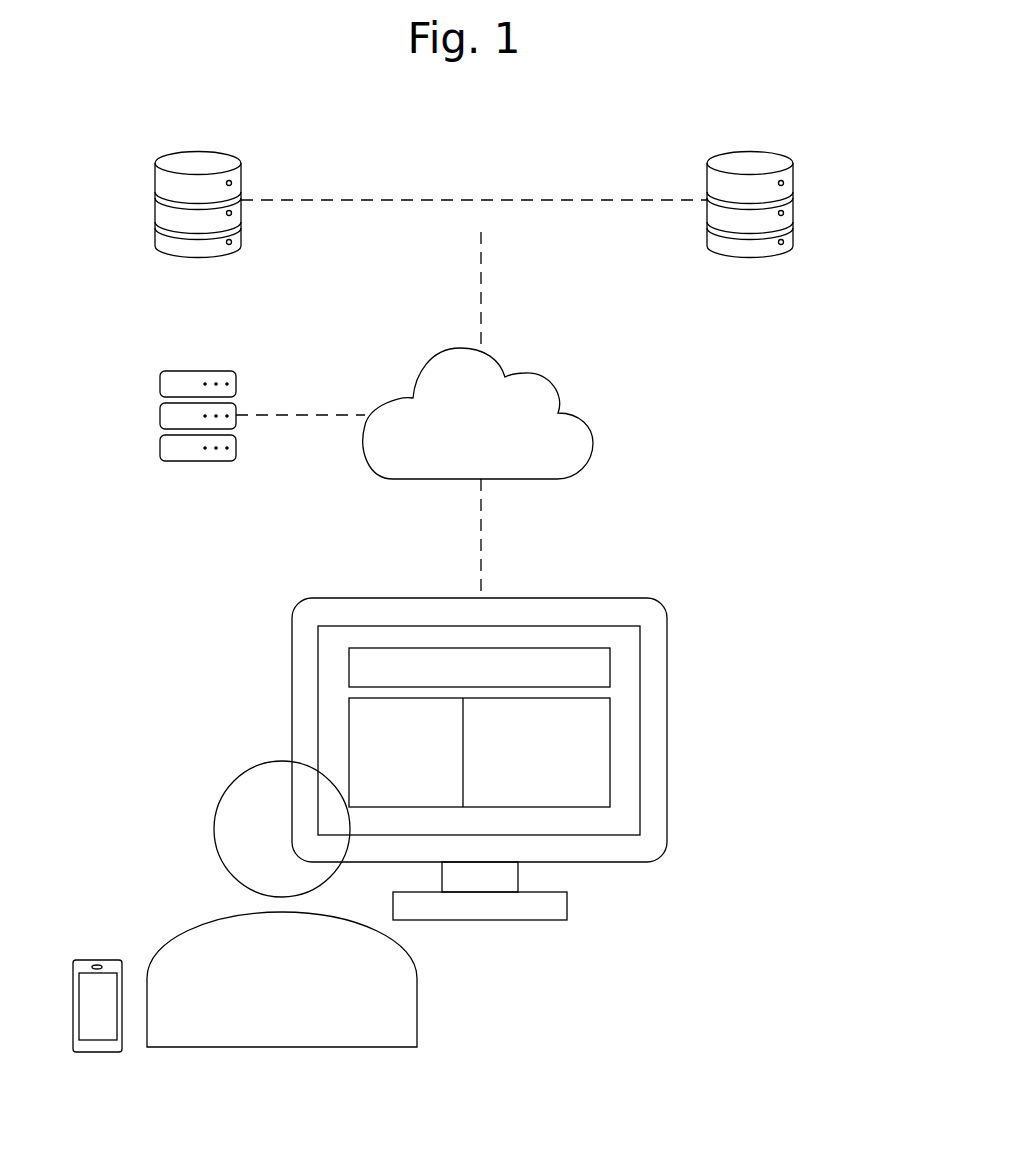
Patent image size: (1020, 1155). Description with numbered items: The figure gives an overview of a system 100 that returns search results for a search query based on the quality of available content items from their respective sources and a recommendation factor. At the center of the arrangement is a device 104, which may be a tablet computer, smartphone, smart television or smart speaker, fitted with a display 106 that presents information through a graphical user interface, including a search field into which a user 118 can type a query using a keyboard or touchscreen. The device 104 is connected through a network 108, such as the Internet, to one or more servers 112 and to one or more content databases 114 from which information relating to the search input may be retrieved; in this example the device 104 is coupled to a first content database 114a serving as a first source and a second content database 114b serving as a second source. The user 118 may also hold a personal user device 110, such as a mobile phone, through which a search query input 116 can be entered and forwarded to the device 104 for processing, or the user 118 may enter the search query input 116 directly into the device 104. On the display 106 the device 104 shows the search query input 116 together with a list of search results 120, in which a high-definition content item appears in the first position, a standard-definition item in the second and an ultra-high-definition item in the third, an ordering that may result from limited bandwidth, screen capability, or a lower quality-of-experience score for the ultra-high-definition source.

The system 100 is at (830, 422).
The content databases 114 is at (462, 179).
The first content database 114a is at (141, 184).
The second content database 114b is at (801, 184).
The server 112 is at (152, 398).
The network 108 is at (583, 418).
The device 104 is at (353, 598).
The display 106 is at (667, 713).
The search query input 116 is at (349, 664).
The list of search results 120 is at (349, 730).
The user 118 is at (287, 1047).
The user device 110 is at (97, 958).